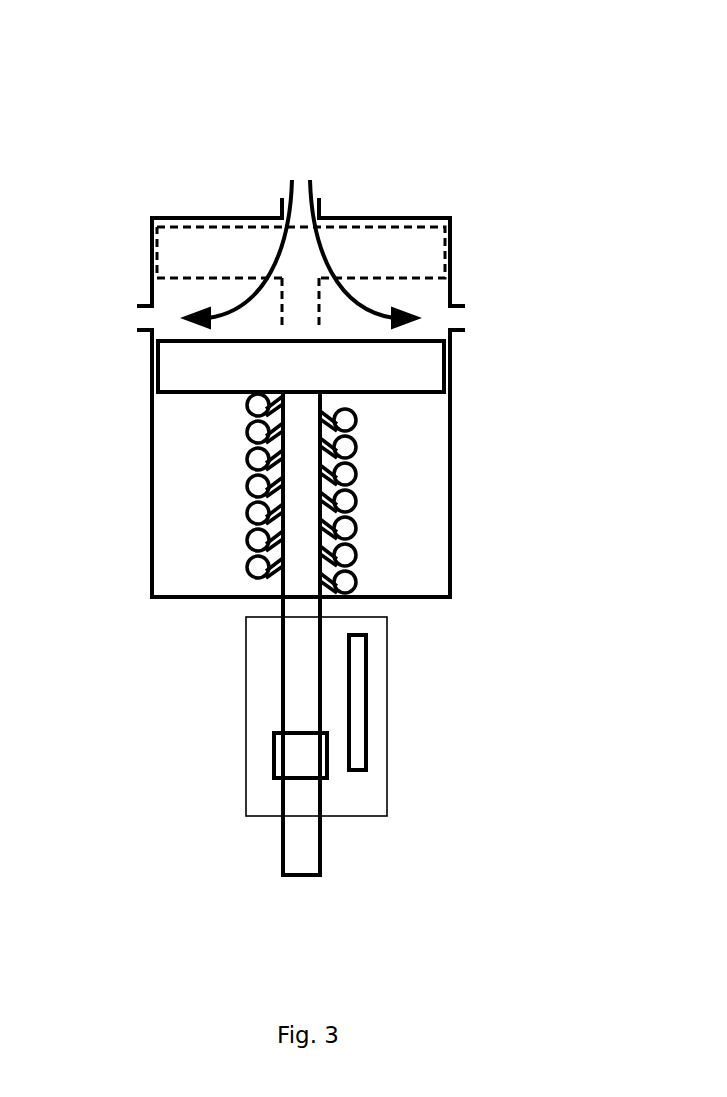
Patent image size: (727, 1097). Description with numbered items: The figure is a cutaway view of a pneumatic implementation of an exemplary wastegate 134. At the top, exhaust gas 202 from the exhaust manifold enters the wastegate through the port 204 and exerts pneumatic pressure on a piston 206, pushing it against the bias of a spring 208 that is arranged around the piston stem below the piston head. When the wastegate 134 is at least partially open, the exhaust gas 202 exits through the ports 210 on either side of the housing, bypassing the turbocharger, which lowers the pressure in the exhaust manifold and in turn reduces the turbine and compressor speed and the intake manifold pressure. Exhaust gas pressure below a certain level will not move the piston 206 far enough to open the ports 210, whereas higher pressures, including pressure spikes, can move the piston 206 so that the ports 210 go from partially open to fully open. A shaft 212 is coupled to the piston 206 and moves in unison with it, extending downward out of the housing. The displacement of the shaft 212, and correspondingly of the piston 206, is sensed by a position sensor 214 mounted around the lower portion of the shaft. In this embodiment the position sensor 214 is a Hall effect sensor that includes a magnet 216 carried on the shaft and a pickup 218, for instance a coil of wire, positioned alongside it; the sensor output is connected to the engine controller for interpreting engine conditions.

The wastegate 134 is at (291, 41).
The exhaust gas 202 is at (302, 175).
The port 204 is at (320, 217).
The piston 206 is at (439, 374).
The spring 208 is at (247, 480).
The ports 210 is at (140, 317).
The shaft 212 is at (282, 842).
The position sensor 214 is at (246, 677).
The magnet 216 is at (275, 763).
The pickup 218 is at (366, 715).